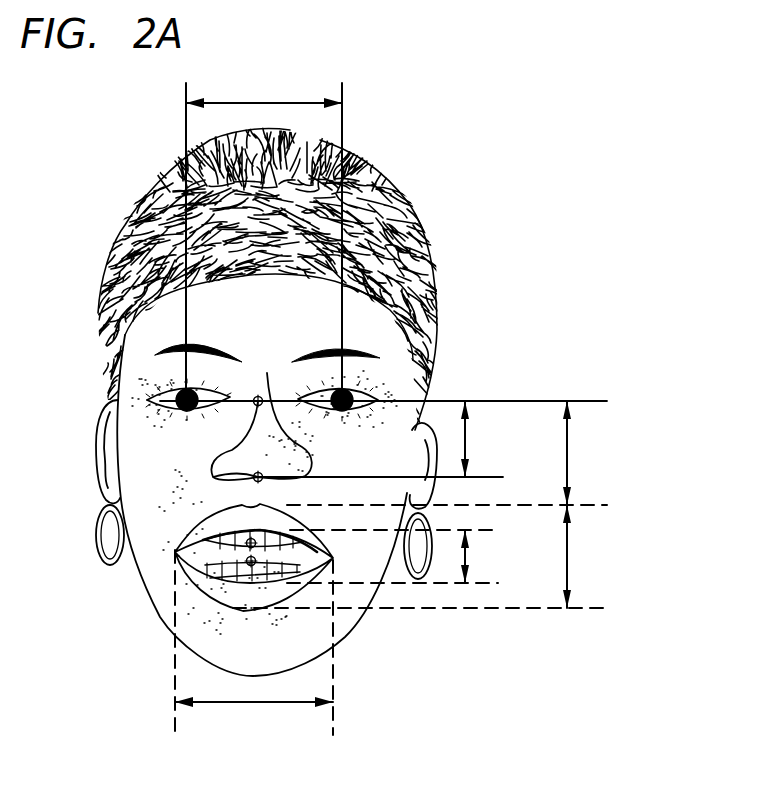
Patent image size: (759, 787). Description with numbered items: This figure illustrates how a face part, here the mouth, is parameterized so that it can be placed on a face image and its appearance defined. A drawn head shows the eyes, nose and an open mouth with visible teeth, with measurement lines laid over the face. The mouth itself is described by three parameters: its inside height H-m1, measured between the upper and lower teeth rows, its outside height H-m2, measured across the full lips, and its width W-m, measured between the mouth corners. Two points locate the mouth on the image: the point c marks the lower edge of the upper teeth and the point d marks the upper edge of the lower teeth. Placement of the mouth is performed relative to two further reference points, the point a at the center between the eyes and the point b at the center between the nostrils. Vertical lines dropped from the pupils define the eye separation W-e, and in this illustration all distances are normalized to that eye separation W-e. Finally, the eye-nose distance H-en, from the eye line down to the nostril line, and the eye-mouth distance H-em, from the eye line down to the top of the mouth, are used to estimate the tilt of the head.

The center between eyes a is at (258, 401).
The center between nostrils b is at (258, 477).
The lower edge of the upper teeth c is at (233, 548).
The upper edge of the lower teeth d is at (246, 565).
The eye separation W-e is at (264, 87).
The mouth width W-m is at (254, 719).
The eye-nose distance H-en is at (495, 439).
The eye-mouth distance H-em is at (601, 453).
The inside height of the mouth H-m1 is at (497, 556).
The outside height of the mouth H-m2 is at (601, 556).